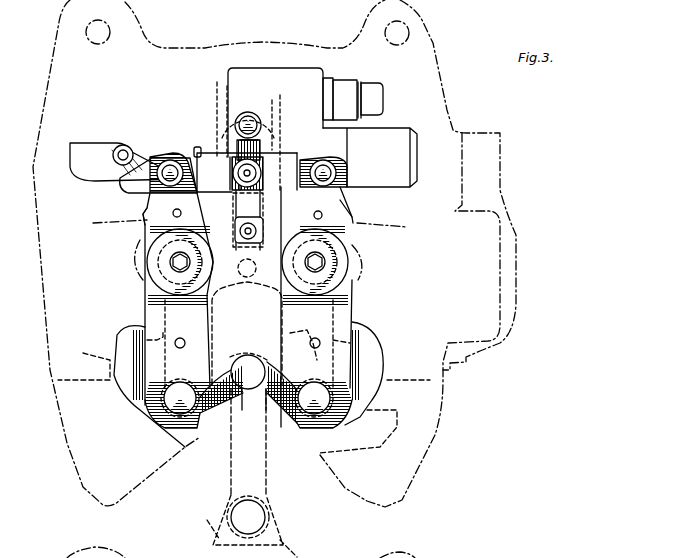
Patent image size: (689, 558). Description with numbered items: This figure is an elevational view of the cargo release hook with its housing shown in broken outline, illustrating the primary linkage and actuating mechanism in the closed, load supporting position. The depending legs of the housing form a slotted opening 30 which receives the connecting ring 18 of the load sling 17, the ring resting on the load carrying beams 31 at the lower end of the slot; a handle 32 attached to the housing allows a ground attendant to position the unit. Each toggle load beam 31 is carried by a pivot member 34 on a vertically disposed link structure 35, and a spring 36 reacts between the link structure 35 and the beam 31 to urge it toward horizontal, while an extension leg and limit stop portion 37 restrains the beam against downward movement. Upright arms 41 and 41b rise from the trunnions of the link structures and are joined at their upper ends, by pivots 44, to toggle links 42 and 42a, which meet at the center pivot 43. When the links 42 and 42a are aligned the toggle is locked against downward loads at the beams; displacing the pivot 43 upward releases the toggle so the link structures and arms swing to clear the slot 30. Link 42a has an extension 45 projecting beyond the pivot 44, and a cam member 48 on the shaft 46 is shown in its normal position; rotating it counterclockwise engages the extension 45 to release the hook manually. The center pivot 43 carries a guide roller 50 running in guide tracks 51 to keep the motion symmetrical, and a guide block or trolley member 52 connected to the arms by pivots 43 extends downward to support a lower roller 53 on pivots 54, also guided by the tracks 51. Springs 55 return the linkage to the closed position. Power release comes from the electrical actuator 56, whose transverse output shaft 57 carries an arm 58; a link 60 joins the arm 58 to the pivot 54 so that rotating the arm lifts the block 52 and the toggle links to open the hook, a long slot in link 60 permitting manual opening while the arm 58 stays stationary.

The sling 17 is at (228, 528).
The connecting ring 18 is at (230, 486).
The slotted opening 30 is at (247, 335).
The load carrying beam 31 is at (227, 427).
The handle 32 is at (517, 235).
The pivot member 34 is at (180, 403).
The link structure 35 is at (143, 302).
The spring 36 is at (160, 373).
The extension leg and limit stop portion 37 is at (128, 332).
The vertically extending arm 41 is at (340, 214).
The vertically extending arm 41b is at (153, 215).
The toggle link 42 is at (284, 150).
The toggle link 42a is at (200, 150).
The pivot 43 is at (228, 194).
The pivot 44 is at (160, 172).
The extension 45 is at (125, 182).
The shaft 46 is at (120, 148).
The cam member 48 is at (72, 153).
The guide roller 50 is at (262, 198).
The guide track 51 is at (222, 100).
The guide block or trolley member 52 is at (233, 133).
The lower roller 53 is at (260, 263).
The pivot 54 is at (241, 242).
The spring 55 is at (197, 157).
The electrical actuator 56 is at (292, 70).
The output shaft 57 is at (250, 115).
The arm 58 is at (253, 117).
The link 60 is at (317, 212).